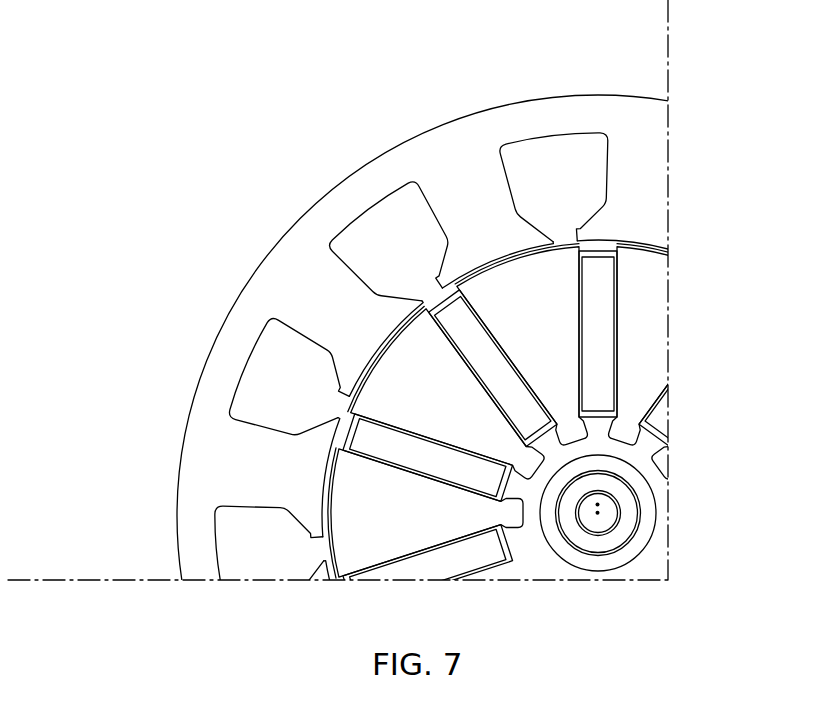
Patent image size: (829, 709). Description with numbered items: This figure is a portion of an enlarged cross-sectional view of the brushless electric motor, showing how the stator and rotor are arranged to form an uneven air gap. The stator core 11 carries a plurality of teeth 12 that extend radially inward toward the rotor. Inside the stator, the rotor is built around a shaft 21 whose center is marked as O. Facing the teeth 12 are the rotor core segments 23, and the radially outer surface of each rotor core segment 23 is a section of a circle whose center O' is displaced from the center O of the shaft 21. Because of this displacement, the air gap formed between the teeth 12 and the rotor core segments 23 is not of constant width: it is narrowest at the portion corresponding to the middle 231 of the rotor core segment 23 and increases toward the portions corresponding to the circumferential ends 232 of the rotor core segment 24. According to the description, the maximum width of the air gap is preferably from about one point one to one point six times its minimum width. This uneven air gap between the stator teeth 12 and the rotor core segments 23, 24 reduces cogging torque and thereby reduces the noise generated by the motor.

The stator core 11 is at (183, 497).
The teeth 12 is at (510, 255).
The shaft 21 is at (610, 517).
The rotor core segment 23 is at (412, 380).
The middle of the rotor core segment 231 is at (473, 227).
The circumferential ends of the rotor core segment 232 is at (583, 232).
The rotor core segment 24 is at (377, 450).
The center of the shaft O is at (609, 572).
The center of the rotor core segment outer surface O' is at (661, 471).